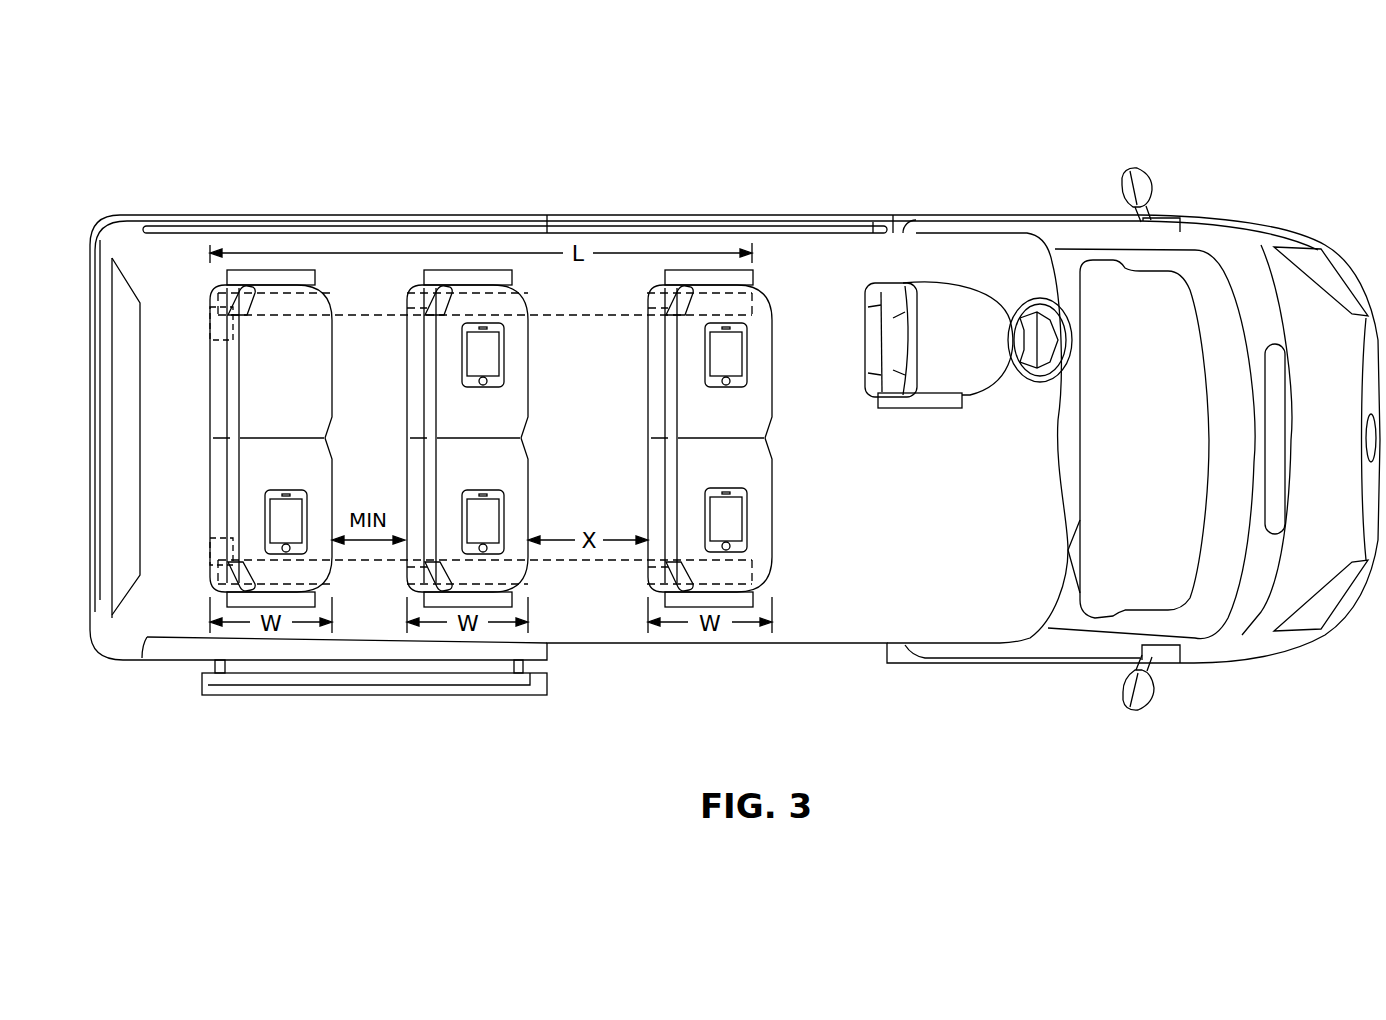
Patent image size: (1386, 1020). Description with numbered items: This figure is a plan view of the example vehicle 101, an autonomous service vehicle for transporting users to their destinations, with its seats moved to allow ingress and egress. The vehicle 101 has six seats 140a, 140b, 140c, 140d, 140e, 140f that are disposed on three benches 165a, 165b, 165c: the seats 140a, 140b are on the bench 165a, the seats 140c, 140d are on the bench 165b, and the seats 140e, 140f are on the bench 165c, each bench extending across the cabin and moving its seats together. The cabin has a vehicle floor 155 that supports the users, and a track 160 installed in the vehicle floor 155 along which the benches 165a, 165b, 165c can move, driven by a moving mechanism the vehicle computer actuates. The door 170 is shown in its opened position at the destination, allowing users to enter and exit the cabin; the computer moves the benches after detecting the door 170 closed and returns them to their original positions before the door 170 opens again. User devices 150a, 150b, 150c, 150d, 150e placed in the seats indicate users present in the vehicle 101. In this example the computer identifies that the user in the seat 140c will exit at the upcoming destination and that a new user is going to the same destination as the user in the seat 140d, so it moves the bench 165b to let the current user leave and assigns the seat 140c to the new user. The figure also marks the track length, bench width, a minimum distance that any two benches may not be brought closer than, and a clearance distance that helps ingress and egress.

The vehicle 101 is at (287, 130).
The seat 140a is at (756, 427).
The seat 140b is at (757, 480).
The seat 140c is at (510, 427).
The seat 140d is at (512, 478).
The seat 140e is at (314, 385).
The seat 140f is at (314, 478).
The user device 150a is at (747, 356).
The user device 150b is at (747, 518).
The user device 150c is at (504, 348).
The user device 150d is at (504, 520).
The user device 150e is at (307, 503).
The vehicle floor 155 is at (803, 272).
The track 160 is at (210, 302).
The bench 165a is at (718, 279).
The bench 165b is at (476, 279).
The bench 165c is at (280, 279).
The door 170 is at (365, 695).